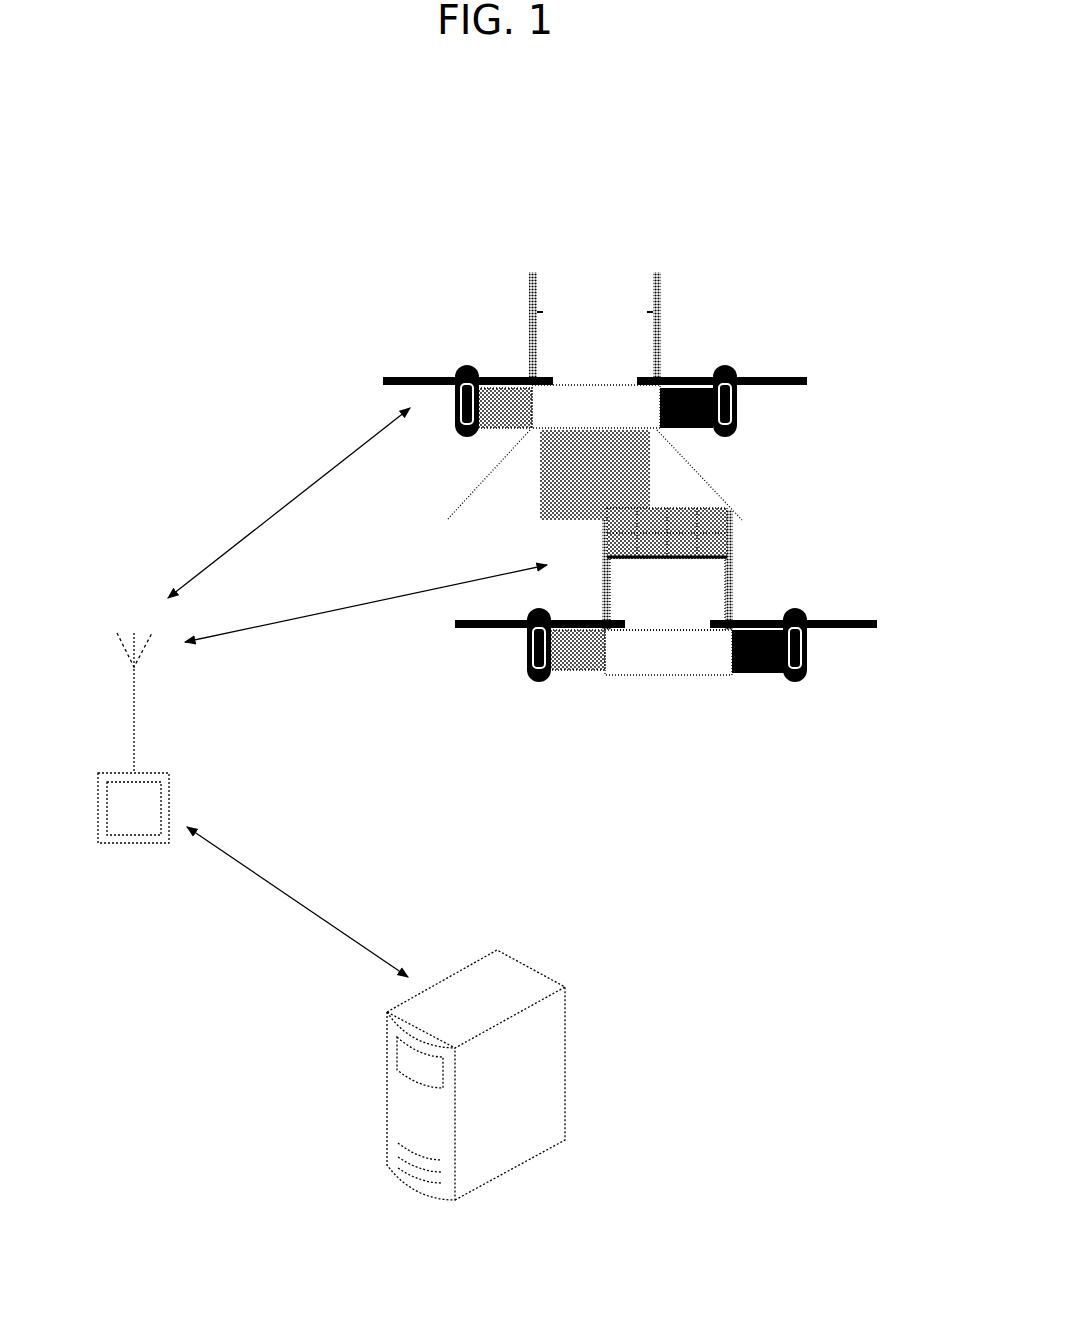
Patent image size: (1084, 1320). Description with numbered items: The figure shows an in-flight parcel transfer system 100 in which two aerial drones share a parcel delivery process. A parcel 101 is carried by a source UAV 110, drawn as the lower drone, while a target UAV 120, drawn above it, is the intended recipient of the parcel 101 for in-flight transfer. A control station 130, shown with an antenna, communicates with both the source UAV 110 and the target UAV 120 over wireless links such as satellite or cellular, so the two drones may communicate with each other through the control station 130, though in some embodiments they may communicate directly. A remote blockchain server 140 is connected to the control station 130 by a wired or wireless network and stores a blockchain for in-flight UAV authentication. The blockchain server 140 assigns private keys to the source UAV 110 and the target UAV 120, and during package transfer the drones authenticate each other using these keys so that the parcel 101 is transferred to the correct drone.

The in-flight parcel transfer system 100 is at (76, 78).
The parcel 101 is at (688, 562).
The source UAV 110 is at (733, 590).
The target UAV 120 is at (528, 297).
The control station 130 is at (98, 782).
The remote blockchain server 140 is at (550, 1037).